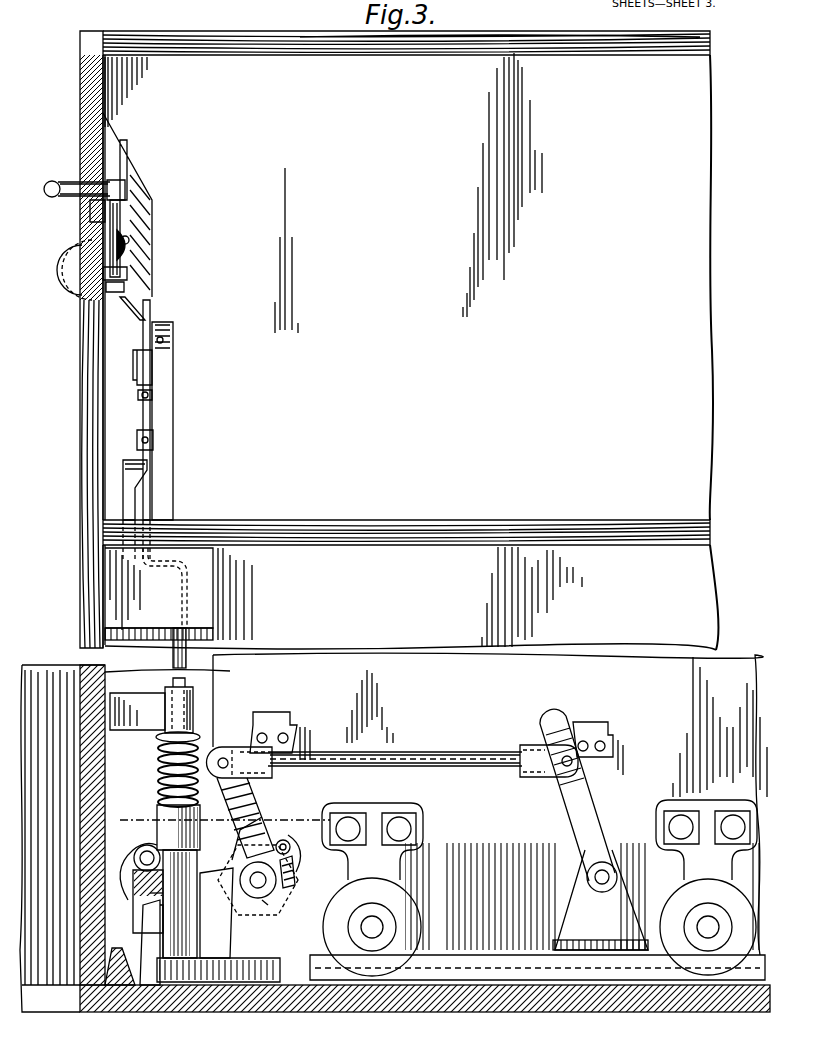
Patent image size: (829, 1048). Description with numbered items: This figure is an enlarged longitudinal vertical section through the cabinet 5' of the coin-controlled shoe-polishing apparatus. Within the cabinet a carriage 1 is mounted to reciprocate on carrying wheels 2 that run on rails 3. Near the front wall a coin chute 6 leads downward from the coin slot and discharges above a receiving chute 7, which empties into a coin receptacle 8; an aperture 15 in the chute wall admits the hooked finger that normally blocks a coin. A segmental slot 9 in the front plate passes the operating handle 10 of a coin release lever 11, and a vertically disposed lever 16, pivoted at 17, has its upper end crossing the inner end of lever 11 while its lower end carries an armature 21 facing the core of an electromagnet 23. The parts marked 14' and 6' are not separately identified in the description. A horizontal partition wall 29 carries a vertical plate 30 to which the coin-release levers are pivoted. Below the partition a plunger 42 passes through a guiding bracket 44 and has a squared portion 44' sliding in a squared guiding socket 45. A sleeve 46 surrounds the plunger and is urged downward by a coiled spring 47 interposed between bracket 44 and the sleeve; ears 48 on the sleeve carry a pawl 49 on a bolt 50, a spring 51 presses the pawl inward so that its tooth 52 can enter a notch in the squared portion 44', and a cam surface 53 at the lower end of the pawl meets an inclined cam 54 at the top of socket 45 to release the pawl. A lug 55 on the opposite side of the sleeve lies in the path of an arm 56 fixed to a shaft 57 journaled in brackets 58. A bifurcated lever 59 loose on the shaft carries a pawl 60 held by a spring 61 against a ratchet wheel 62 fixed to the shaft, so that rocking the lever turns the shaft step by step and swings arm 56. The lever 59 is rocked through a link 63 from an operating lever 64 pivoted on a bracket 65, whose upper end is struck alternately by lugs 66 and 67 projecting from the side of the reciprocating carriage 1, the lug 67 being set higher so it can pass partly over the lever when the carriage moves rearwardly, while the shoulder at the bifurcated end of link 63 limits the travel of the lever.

The carriage 1 is at (442, 663).
The carrying wheels 2 is at (107, 42).
The rails 3 is at (464, 972).
The casing or cabinet 5' is at (375, 308).
The coin slot or chute 6 is at (150, 242).
The connecting rod 6' is at (395, 745).
The receiving chute 7 is at (123, 473).
The coin receptacle 8 is at (205, 603).
The segmental slot 9 is at (88, 210).
The operating handle 10 is at (62, 182).
The coin release lever 11 is at (113, 191).
The bracket plate 14' is at (158, 205).
The aperture 15 is at (221, 824).
The lever 16 is at (117, 221).
The pivot 17 is at (130, 243).
The armature 21 is at (125, 268).
The electro magnet 23 is at (102, 327).
The horizontal partition wall 29 is at (400, 532).
The vertical plate 30 is at (167, 413).
The plunger 42 is at (230, 671).
The guiding bracket 44 is at (180, 710).
The squared portion 44' is at (218, 925).
The squared guiding socket 45 is at (160, 893).
The sleeve 46 is at (175, 830).
The coiled spring 47 is at (163, 757).
The ears 48 is at (133, 868).
The pawl 49 is at (133, 920).
The bolt or rivet 50 is at (147, 858).
The spring 51 is at (128, 878).
The tooth or projection 52 is at (187, 897).
The cam surface 53 is at (112, 957).
The inclined surface or cam 54 is at (177, 973).
The lug or projection 55 is at (218, 873).
The finger or arm 56 is at (207, 875).
The shaft 57 is at (268, 883).
The brackets 58 is at (265, 905).
The bifurcated lever 59 is at (262, 817).
The pawl 60 is at (297, 868).
The spring 61 is at (307, 857).
The ratchet wheel 62 is at (330, 895).
The link 63 is at (242, 753).
The operating lever 64 is at (597, 800).
The bracket 65 is at (600, 900).
The lug 66 is at (600, 722).
The lug 67 is at (282, 717).